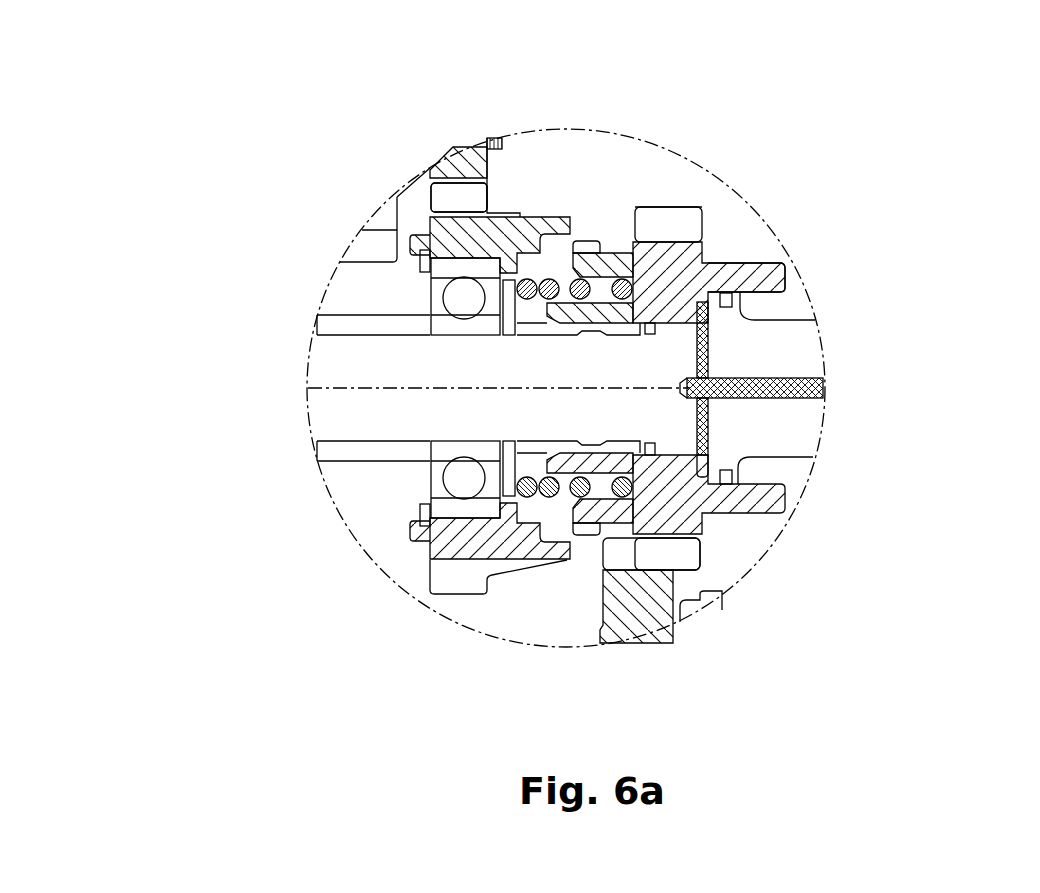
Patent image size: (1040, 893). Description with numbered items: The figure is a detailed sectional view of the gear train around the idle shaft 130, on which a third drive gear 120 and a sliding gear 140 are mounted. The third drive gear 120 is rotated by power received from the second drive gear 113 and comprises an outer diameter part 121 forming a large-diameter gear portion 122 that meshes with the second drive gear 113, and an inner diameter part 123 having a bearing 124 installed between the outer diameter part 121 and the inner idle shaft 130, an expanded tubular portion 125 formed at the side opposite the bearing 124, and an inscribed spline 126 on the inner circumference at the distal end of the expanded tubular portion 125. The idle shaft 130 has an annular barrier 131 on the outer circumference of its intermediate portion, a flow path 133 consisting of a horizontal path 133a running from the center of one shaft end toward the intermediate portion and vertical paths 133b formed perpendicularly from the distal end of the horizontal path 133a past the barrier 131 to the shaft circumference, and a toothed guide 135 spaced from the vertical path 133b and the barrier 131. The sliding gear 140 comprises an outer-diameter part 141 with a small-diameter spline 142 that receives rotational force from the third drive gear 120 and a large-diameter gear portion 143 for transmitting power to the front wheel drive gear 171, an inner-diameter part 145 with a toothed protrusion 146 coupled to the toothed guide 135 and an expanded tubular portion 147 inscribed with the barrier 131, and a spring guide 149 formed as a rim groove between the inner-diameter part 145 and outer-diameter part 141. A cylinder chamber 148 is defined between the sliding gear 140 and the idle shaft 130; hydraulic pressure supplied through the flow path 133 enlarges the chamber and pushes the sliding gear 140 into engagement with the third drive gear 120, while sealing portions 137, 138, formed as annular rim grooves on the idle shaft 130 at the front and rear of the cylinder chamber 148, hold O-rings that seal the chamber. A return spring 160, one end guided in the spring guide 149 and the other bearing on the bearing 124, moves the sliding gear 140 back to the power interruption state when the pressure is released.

The second drive gear 113 is at (443, 168).
The third drive gear 120 is at (512, 176).
The outer diameter part 121 is at (453, 198).
The large-diameter gear portion 122 is at (459, 197).
The inner diameter part 123 is at (447, 264).
The bearing 124 is at (457, 298).
The expanded tubular portion 125 is at (550, 243).
The inscribed spline 126 is at (588, 243).
The idle shaft 130 is at (338, 360).
The annular barrier 131 is at (705, 516).
The flow path 133 is at (839, 389).
The horizontal path 133a is at (650, 445).
The vertical path 133b is at (703, 360).
The toothed guide 135 is at (535, 460).
The sealing portion 137 is at (738, 470).
The sealing portion 138 is at (745, 470).
The sliding gear 140 is at (724, 243).
The outer-diameter part 141 is at (790, 23).
The small-diameter spline 142 is at (683, 223).
The large-diameter gear portion 143 is at (700, 212).
The inner-diameter part 145 is at (809, 300).
The toothed protrusion 146 is at (590, 334).
The expanded tubular portion 147 is at (748, 302).
The cylinder chamber 148 is at (783, 277).
The spring guide 149 is at (713, 507).
The return spring 160 is at (635, 486).
The front wheel drive gear 171 is at (613, 607).